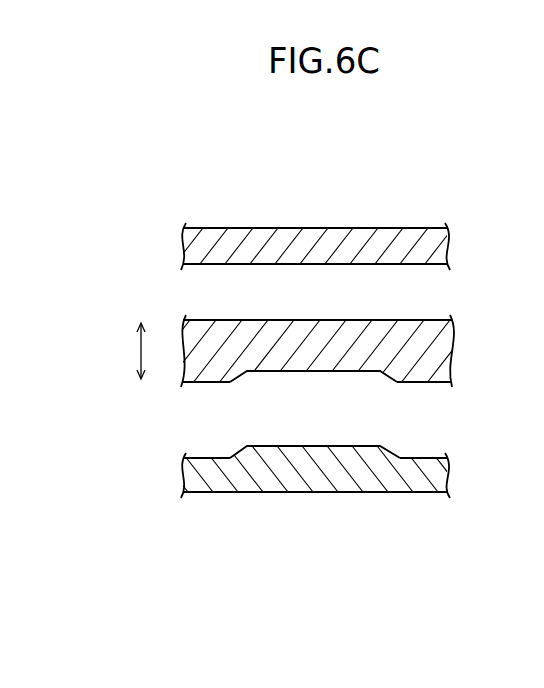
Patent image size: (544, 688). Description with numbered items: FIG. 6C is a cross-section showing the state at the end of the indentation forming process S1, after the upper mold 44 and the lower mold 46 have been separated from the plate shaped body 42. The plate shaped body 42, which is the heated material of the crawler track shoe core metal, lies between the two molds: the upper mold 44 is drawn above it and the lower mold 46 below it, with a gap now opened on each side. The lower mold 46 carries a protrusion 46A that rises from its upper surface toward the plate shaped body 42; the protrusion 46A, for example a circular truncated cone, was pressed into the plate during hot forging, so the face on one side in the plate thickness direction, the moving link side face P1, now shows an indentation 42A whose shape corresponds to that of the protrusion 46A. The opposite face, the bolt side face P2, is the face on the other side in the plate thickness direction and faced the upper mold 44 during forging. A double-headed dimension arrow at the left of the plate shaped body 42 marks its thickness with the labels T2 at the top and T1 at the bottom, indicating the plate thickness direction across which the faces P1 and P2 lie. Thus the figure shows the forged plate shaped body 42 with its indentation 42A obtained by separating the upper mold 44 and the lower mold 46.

The indentation forming process S1 is at (217, 160).
The upper mold 44 is at (345, 228).
The plate shaped body 42 is at (330, 343).
The indentation 42A is at (307, 371).
The moving link side face P1 is at (423, 383).
The bolt side face P2 is at (283, 320).
The lower mold 46 is at (332, 500).
The protrusion 46A is at (286, 445).
The first thickness T1 is at (137, 382).
The second thickness T2 is at (137, 324).